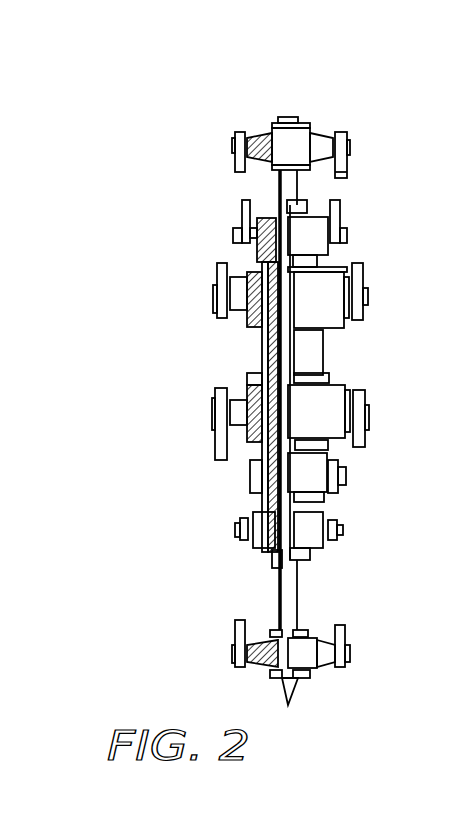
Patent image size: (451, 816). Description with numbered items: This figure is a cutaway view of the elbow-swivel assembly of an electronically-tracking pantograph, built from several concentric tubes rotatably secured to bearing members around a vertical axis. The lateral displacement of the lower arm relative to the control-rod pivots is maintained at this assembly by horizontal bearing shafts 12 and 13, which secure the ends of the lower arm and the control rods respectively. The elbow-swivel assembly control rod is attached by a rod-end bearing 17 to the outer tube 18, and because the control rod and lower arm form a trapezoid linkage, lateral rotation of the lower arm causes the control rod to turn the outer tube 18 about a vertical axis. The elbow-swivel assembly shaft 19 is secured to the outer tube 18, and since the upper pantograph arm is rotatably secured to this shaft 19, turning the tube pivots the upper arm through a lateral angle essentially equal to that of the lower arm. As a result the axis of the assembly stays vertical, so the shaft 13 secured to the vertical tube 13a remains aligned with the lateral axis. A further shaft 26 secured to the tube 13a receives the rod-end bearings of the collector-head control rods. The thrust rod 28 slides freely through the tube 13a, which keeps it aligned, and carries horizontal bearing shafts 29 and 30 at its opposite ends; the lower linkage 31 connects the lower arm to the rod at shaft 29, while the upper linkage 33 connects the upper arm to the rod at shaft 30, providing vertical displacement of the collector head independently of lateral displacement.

The horizontal bearing shaft 12 is at (212, 408).
The horizontal bearing shaft 13 is at (235, 530).
The vertical tube 13a is at (272, 362).
The rod-end bearing 17 is at (346, 474).
The outer tube 18 is at (322, 357).
The elbow-swivel assembly shaft 19 is at (372, 293).
The shaft 26 is at (230, 233).
The thrust rod 28 is at (288, 582).
The horizontal bearing shaft 29 is at (233, 652).
The horizontal bearing shaft 30 is at (352, 143).
The lower linkage 31 is at (343, 640).
The upper linkage 33 is at (347, 165).